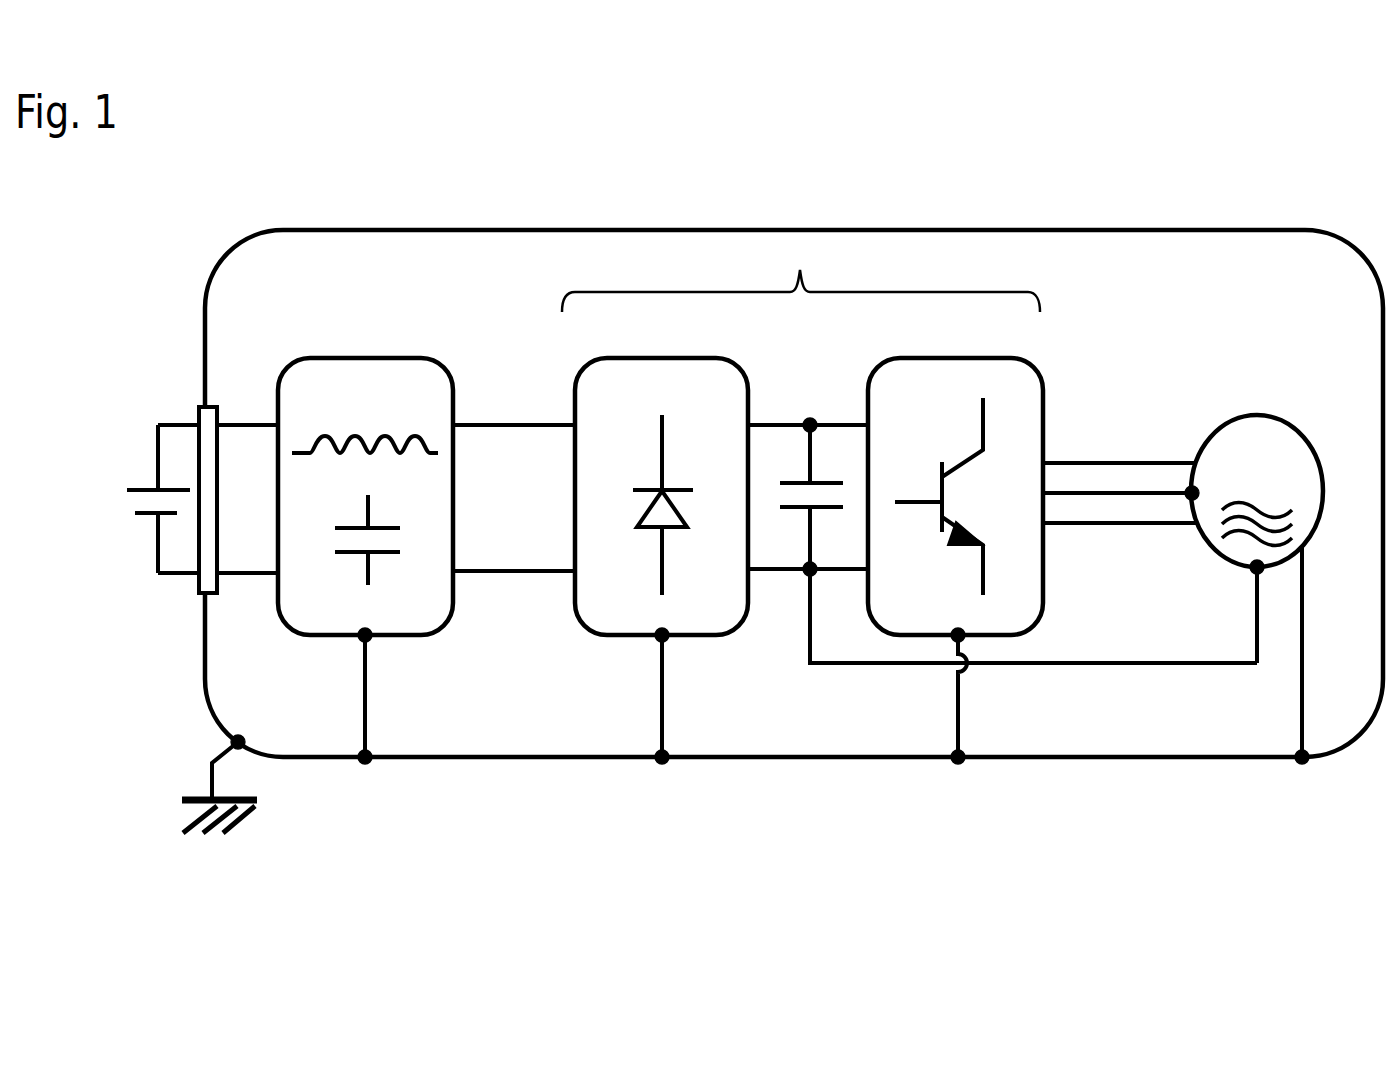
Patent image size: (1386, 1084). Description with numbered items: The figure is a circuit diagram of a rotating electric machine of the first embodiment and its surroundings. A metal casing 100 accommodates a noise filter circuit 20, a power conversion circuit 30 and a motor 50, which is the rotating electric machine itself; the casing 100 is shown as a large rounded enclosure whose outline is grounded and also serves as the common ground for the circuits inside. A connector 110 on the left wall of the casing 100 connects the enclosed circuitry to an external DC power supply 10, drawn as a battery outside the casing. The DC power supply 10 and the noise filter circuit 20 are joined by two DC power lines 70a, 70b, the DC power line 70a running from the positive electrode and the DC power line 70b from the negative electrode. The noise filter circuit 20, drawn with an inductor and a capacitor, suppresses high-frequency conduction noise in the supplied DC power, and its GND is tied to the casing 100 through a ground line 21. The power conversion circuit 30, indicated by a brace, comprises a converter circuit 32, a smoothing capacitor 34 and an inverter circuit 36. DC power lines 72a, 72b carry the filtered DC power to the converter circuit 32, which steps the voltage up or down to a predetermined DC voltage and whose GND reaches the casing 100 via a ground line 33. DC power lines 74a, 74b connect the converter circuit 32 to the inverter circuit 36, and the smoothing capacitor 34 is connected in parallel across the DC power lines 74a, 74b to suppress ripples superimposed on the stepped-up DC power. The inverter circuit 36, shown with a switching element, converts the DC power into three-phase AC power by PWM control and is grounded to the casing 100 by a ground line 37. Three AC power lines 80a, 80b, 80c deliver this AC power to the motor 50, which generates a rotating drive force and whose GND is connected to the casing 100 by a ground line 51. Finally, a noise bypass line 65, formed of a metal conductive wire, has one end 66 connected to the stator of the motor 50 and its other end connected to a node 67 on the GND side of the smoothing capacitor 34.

The metal casing 100 is at (392, 229).
The connector 110 is at (208, 406).
The DC power supply 10 is at (133, 489).
The noise filter circuit 20 is at (372, 357).
The ground line 21 is at (368, 722).
The power conversion circuit 30 is at (801, 273).
The converter circuit 32 is at (628, 357).
The ground line 33 is at (665, 725).
The smoothing capacitor 34 is at (822, 482).
The inverter circuit 36 is at (925, 357).
The ground line 37 is at (965, 725).
The motor 50 is at (1250, 414).
The ground line 51 is at (1305, 725).
The noise bypass line 65 is at (1100, 666).
The end of noise bypass line 66 is at (1250, 572).
The node 67 is at (806, 578).
The DC power line 70a is at (230, 423).
The DC power line 70b is at (232, 571).
The DC power line 72a is at (503, 423).
The DC power line 72b is at (503, 569).
The DC power line 74a is at (766, 422).
The DC power line 74b is at (786, 566).
The AC power line 80a is at (1062, 461).
The AC power line 80b is at (1105, 491).
The AC power line 80c is at (1130, 521).